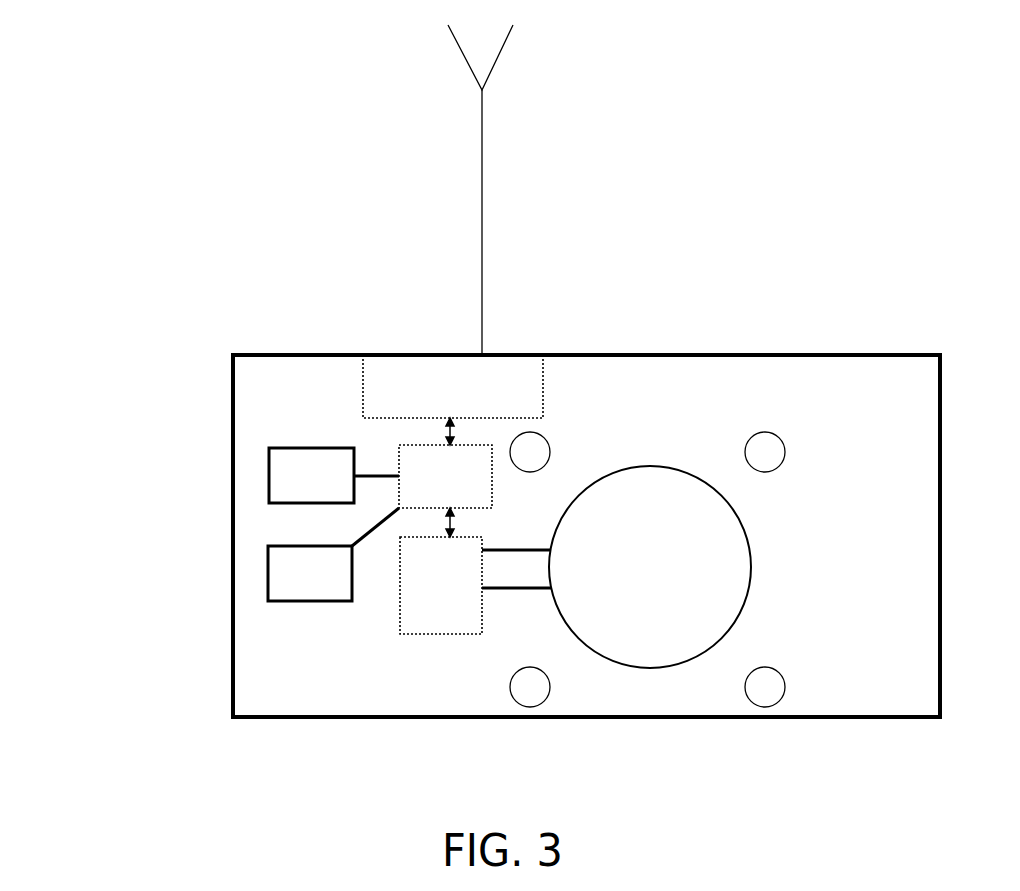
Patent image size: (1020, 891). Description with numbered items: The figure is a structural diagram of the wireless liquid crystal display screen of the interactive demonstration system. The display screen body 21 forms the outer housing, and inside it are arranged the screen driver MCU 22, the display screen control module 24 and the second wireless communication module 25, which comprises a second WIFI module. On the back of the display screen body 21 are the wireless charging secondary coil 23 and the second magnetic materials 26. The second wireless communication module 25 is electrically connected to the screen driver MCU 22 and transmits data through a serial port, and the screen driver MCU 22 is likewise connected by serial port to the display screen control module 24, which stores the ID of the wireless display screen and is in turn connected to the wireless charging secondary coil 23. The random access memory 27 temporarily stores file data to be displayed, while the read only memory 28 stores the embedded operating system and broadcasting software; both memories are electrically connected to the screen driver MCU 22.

The display screen body 21 is at (838, 356).
The screen driver MCU 22 is at (399, 446).
The wireless charging secondary coil 23 is at (654, 467).
The display screen control module 24 is at (400, 634).
The second wireless communication module 25 is at (406, 221).
The second magnetic materials 26 is at (546, 434).
The random access memory (RAM) 27 is at (268, 477).
The read only memory (ROM) 28 is at (268, 573).